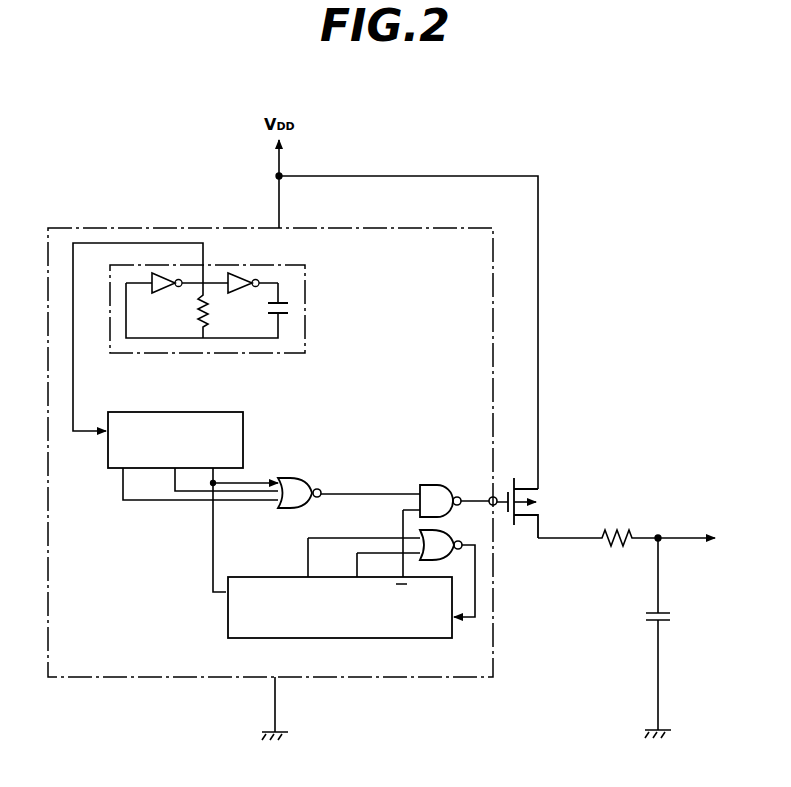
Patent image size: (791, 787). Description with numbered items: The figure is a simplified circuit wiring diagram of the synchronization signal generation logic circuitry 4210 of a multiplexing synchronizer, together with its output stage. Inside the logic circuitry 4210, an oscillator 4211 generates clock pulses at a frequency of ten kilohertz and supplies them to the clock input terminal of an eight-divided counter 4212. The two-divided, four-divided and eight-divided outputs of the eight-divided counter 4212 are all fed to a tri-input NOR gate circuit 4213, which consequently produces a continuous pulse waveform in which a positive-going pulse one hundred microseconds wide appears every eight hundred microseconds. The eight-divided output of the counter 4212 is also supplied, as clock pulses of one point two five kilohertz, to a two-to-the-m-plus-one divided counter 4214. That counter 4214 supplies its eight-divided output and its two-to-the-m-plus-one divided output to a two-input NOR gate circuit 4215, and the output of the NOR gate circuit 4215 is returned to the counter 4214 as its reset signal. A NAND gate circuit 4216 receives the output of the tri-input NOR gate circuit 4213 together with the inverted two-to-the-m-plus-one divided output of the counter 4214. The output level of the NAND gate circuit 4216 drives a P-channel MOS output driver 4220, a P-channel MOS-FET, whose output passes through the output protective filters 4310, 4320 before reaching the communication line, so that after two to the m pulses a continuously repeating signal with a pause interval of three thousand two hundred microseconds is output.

The synchronization signal generation logic circuitry 4210 is at (150, 228).
The oscillator 4211 is at (305, 290).
The 8-divided counter 4212 is at (215, 412).
The tri-input NOR gate circuit 4213 is at (297, 478).
The 2^(m+1)-divided counter 4214 is at (228, 598).
The two-input NOR gate circuit 4215 is at (447, 557).
The NAND gate circuit 4216 is at (437, 485).
The P-channel MOS output driver 4220 is at (546, 492).
The output protective filter 4310 is at (618, 536).
The output protective filter 4320 is at (646, 615).